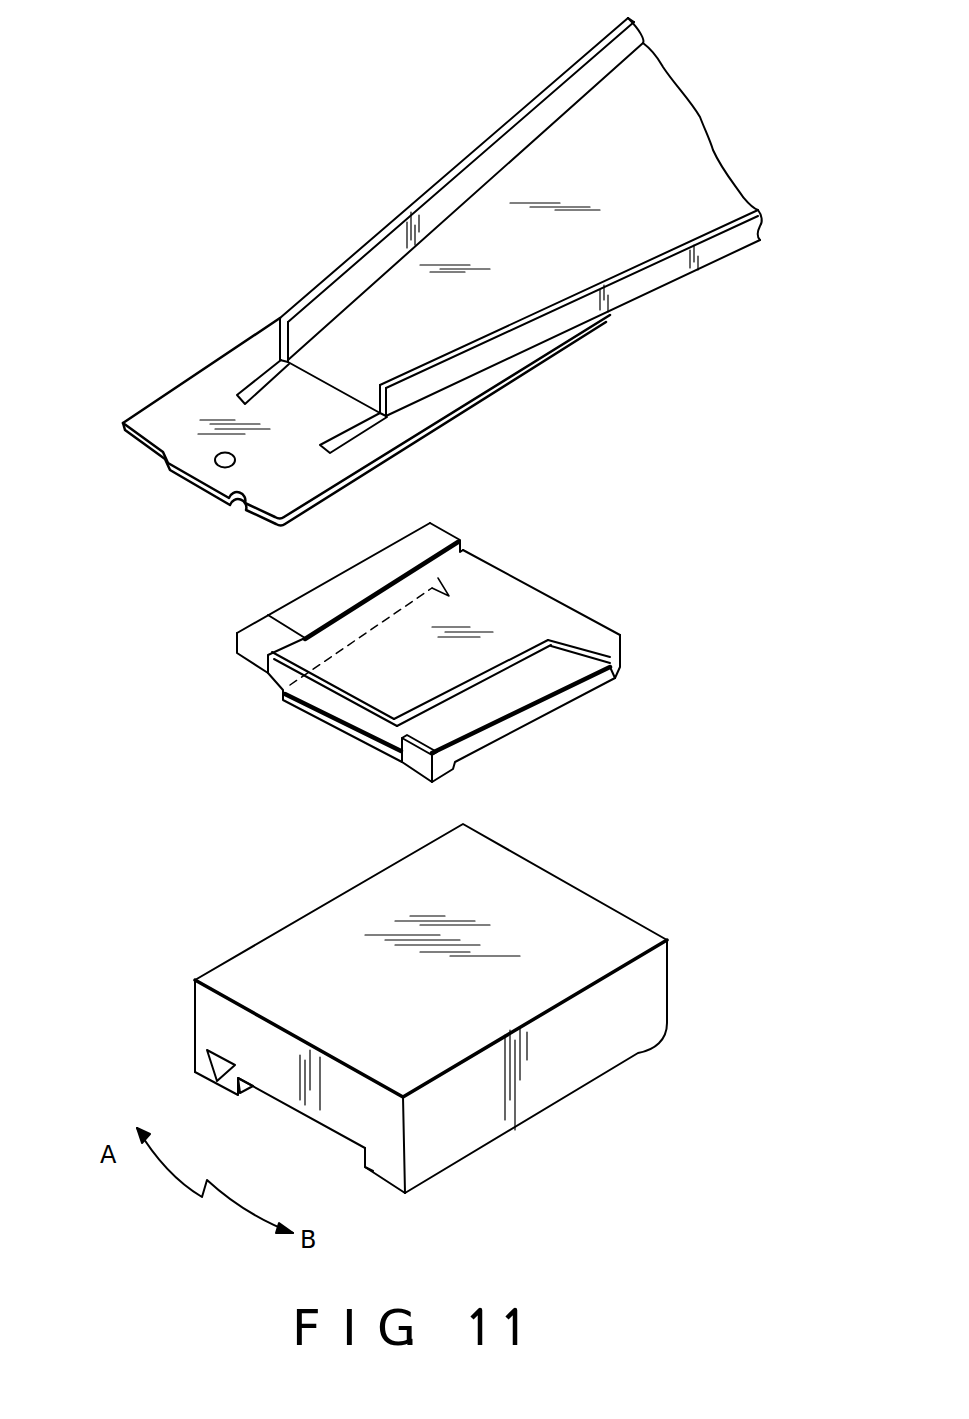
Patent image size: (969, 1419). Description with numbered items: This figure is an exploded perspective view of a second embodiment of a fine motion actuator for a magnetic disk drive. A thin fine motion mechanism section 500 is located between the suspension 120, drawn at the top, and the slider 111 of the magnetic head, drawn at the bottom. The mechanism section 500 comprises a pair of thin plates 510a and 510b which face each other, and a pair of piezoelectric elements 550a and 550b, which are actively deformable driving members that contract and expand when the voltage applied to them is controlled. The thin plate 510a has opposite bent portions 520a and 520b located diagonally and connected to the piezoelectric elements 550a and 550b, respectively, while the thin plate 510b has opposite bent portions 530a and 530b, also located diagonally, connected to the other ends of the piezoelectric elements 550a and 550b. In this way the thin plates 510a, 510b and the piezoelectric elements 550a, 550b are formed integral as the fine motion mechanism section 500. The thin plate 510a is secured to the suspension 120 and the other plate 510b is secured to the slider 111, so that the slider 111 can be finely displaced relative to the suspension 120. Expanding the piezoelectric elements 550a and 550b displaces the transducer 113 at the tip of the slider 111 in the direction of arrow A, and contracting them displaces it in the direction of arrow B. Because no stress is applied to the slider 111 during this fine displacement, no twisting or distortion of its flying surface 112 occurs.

The suspension 120 is at (222, 378).
The fine motion mechanism section 500 is at (712, 510).
The thin plate 510a is at (515, 585).
The thin plate 510b is at (327, 723).
The bent portion 520a is at (247, 657).
The bent portion 520b is at (622, 650).
The bent portion 530a is at (449, 521).
The bent portion 530b is at (407, 758).
The piezoelectric element 550a is at (303, 603).
The piezoelectric element 550b is at (535, 708).
The slider 111 is at (237, 965).
The flying surface 112 is at (245, 1092).
The transducer 113 is at (208, 1052).